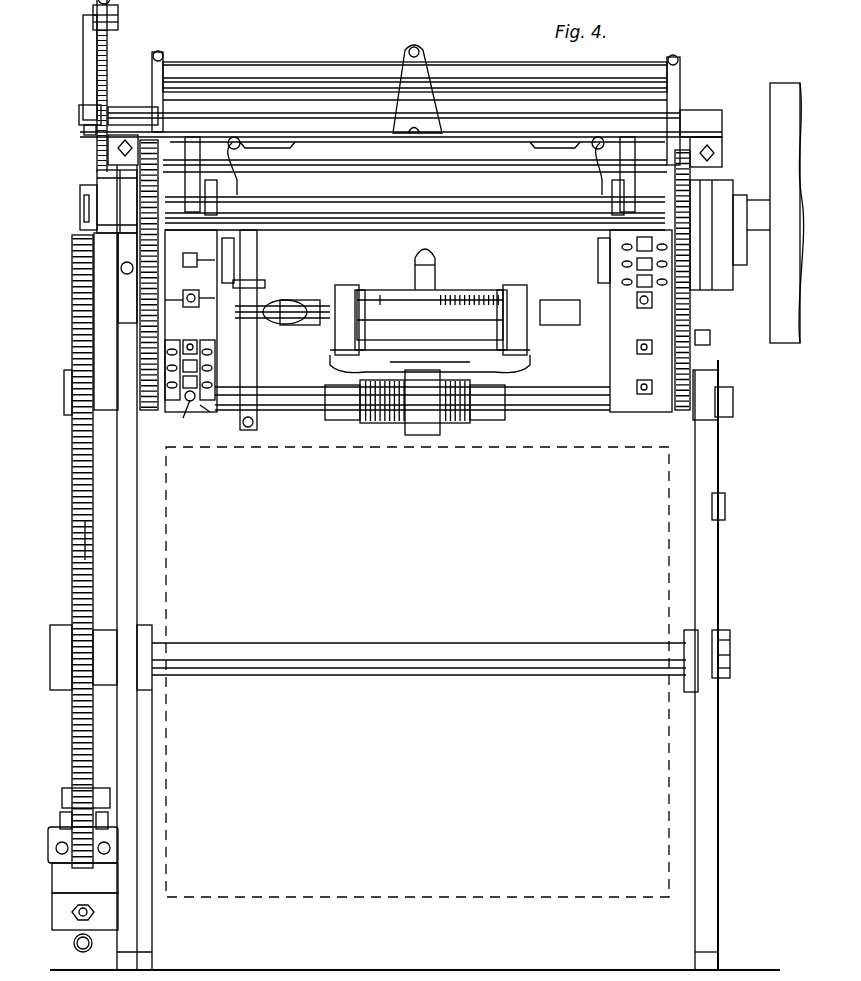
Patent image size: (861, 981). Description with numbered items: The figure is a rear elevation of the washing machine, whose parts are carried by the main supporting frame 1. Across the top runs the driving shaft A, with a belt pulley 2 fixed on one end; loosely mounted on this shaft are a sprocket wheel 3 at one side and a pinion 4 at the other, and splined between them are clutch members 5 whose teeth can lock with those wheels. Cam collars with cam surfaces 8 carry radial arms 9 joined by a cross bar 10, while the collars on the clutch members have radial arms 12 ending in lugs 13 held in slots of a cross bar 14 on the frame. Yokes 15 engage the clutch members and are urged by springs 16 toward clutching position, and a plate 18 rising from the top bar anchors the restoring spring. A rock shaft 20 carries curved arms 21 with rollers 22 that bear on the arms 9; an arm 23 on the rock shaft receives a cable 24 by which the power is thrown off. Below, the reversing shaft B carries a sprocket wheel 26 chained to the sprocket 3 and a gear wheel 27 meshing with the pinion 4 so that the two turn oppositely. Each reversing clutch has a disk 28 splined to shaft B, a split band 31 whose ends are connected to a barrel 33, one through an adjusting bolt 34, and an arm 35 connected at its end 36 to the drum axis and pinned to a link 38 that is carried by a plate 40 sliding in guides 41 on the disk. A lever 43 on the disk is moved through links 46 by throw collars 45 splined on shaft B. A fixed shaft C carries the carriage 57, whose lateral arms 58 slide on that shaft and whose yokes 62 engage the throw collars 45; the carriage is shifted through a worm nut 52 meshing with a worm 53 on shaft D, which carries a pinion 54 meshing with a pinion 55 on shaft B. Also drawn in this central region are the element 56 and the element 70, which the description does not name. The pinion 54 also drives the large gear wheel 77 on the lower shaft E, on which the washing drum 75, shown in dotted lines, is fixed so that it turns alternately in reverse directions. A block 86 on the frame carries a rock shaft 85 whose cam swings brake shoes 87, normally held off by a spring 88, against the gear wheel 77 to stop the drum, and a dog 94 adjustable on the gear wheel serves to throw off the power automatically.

The main or supporting frame 1 is at (135, 808).
The belt pulley 2 is at (782, 345).
The sprocket wheel 3 is at (688, 200).
The pinion 4 is at (142, 200).
The clutch members 5 is at (218, 205).
The cam surfaces 8 is at (418, 321).
The radial arms 9 is at (165, 80).
The cross bar 10 is at (305, 70).
The radial arms 12 is at (416, 174).
The lugs 13 is at (205, 130).
The cross bar 14 is at (305, 135).
The yokes 15 is at (230, 196).
The springs 16 is at (290, 143).
The plate 18 is at (425, 68).
The rock shaft 20 is at (200, 100).
The curved arms 21 is at (682, 100).
The rollers 22 is at (160, 52).
The arm 23 is at (84, 78).
The cable 24 is at (106, 92).
The sprocket wheel 26 is at (705, 370).
The gear wheel 27 is at (140, 290).
The disk 28 is at (228, 240).
The split band 31 is at (409, 303).
The barrel 33 is at (208, 415).
The adjusting bolt 34 is at (185, 412).
The arm 35 is at (245, 270).
The connection of arm to drum axis 36 is at (258, 420).
The link 38 is at (258, 290).
The plate 40 is at (232, 304).
The guides 41 is at (215, 270).
The lever 43 is at (280, 300).
The throw collars 45 is at (348, 288).
The links 46 is at (412, 386).
The worm nut 52 is at (422, 402).
The worm 53 is at (385, 425).
The pinion 54 is at (78, 410).
The pinion 55 is at (72, 250).
The rod 56 is at (489, 372).
The carriage 57 is at (430, 356).
The laterally extending arms 58 is at (281, 372).
The yokes 62 is at (355, 400).
The drum 70 is at (445, 290).
The washing drum 75 is at (168, 720).
The large gear wheel 77 is at (85, 550).
The rock shaft 85 is at (94, 916).
The block 86 is at (85, 878).
The brake shoes 87 is at (64, 812).
The spring 88 is at (82, 952).
The dog 94 is at (100, 790).
The shaft A is at (470, 205).
The shaft B is at (568, 360).
The shaft C is at (311, 262).
The shaft D is at (525, 400).
The shaft E is at (428, 650).